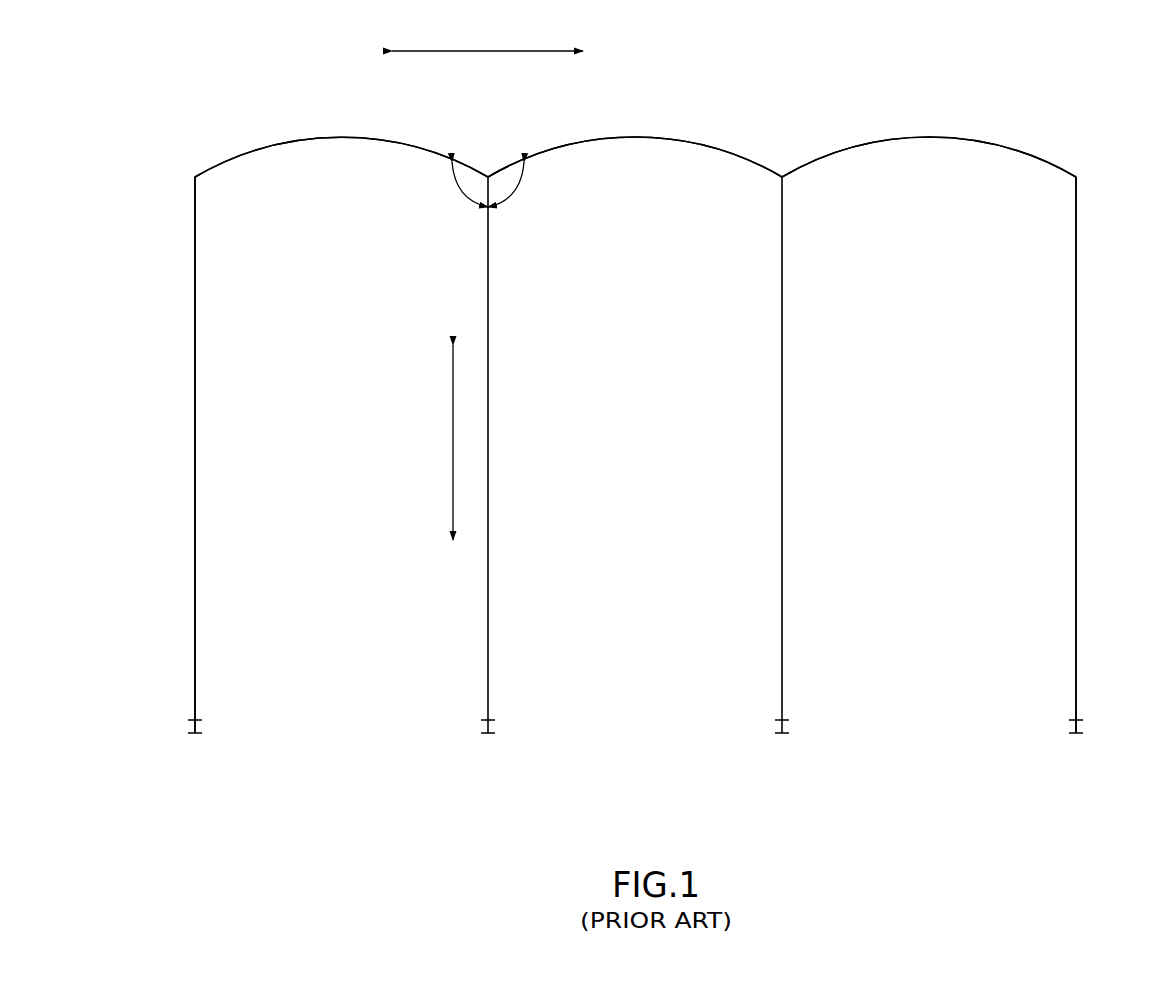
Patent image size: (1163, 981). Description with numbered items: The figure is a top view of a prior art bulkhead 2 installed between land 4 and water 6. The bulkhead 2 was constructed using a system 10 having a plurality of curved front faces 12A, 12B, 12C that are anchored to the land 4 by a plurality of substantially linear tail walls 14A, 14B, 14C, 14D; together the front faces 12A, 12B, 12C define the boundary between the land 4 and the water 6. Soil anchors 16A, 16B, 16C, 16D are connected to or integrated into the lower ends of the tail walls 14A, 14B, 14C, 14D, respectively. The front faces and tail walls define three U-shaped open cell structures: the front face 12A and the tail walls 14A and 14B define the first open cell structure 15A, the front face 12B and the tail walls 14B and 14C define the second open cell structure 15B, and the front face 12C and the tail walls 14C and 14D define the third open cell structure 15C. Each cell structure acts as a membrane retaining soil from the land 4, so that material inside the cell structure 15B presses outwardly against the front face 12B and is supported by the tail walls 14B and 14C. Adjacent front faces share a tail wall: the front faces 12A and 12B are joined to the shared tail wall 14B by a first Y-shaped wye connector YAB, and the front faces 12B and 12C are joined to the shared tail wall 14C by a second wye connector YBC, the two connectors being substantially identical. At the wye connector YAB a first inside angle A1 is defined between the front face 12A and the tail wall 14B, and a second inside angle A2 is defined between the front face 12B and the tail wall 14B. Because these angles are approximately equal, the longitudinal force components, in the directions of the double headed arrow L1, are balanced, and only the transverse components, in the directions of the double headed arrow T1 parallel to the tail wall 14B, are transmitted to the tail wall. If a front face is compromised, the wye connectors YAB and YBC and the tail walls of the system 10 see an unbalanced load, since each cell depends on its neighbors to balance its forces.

The system 10 is at (133, 165).
The bulkhead 2 is at (221, 165).
The land 4 is at (681, 836).
The water 6 is at (664, 87).
The front face 12A is at (340, 137).
The front face 12B is at (700, 146).
The front face 12C is at (1028, 152).
The tail wall 14A is at (195, 420).
The tail wall 14B is at (488, 420).
The tail wall 14C is at (782, 420).
The tail wall 14D is at (1076, 420).
The first open cell structure 15A is at (358, 239).
The second open cell structure 15B is at (652, 237).
The third open cell structure 15C is at (946, 237).
The soil anchor 16A is at (195, 736).
The soil anchor 16B is at (488, 736).
The soil anchor 16C is at (782, 736).
The soil anchor 16D is at (1076, 736).
The wye connector YAB is at (488, 172).
The wye connector YBC is at (782, 172).
The first inside angle A1 is at (463, 190).
The second inside angle A2 is at (513, 190).
The double headed arrow L1 is at (490, 52).
The double headed arrow T1 is at (450, 443).